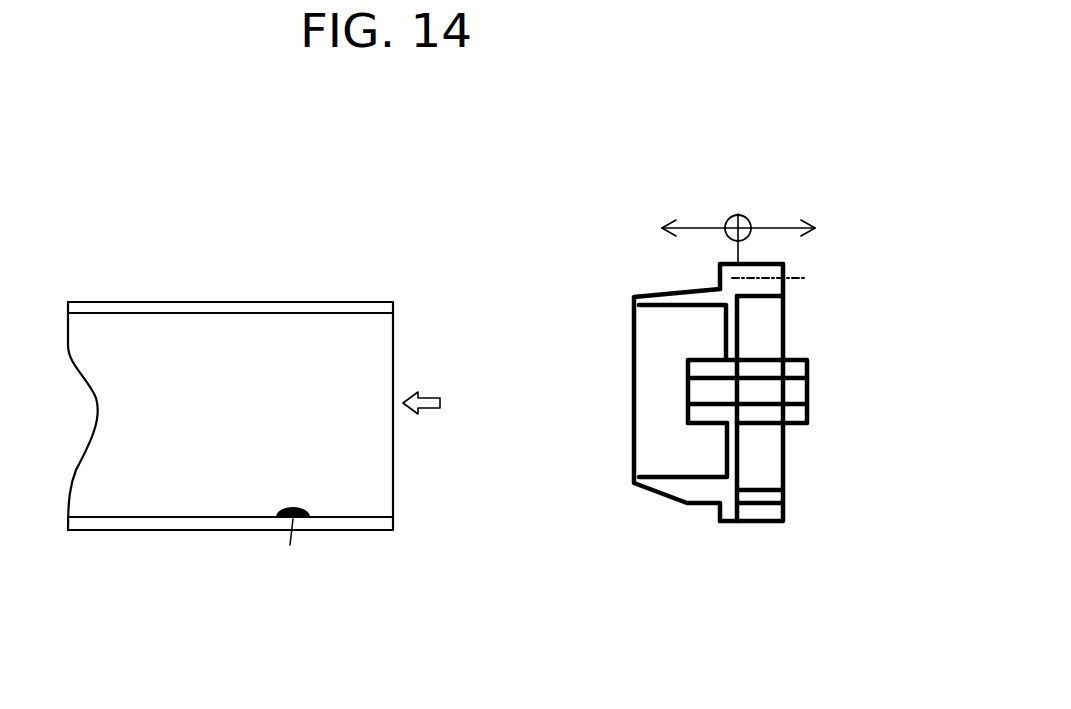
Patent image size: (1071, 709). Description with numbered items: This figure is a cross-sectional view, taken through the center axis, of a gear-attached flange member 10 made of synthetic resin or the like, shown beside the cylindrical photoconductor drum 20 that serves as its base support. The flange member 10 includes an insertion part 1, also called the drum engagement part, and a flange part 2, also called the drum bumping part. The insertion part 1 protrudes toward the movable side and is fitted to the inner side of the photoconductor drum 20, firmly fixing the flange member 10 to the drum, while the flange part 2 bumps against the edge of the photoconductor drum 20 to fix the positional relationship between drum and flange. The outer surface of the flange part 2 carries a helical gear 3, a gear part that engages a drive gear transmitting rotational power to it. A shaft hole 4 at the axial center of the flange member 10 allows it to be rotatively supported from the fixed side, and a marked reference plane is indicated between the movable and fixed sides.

The insertion part 1 is at (690, 280).
The flange part 2 is at (757, 522).
The helical gear 3 is at (750, 263).
The shaft hole 4 is at (701, 393).
The flange member 10 is at (860, 199).
The photoconductor drum 20 is at (308, 307).